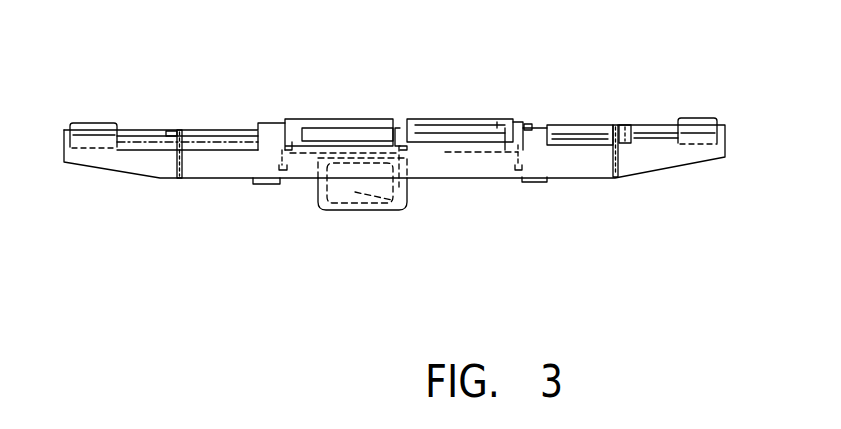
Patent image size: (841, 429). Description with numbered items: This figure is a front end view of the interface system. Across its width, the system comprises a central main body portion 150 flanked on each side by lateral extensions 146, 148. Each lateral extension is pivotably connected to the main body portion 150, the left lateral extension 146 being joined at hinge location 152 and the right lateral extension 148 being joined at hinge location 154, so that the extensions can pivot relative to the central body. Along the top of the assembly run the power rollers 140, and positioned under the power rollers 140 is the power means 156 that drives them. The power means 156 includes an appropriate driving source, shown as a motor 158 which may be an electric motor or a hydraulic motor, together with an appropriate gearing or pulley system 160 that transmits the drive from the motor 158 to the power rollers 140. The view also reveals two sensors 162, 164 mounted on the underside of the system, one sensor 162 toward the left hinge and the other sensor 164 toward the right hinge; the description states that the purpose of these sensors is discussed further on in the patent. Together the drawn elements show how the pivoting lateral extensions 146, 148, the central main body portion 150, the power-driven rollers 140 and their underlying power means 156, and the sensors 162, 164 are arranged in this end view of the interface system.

The power rollers 140 is at (375, 119).
The lateral extension 146 is at (137, 158).
The lateral extension 148 is at (662, 162).
The main body portion 150 is at (568, 160).
The hinge location 152 is at (181, 180).
The hinge location 154 is at (616, 180).
The power means 156 is at (353, 215).
The motor 158 is at (408, 203).
The gearing or pulley system 160 is at (405, 150).
The sensor 162 is at (263, 185).
The sensor 164 is at (540, 184).